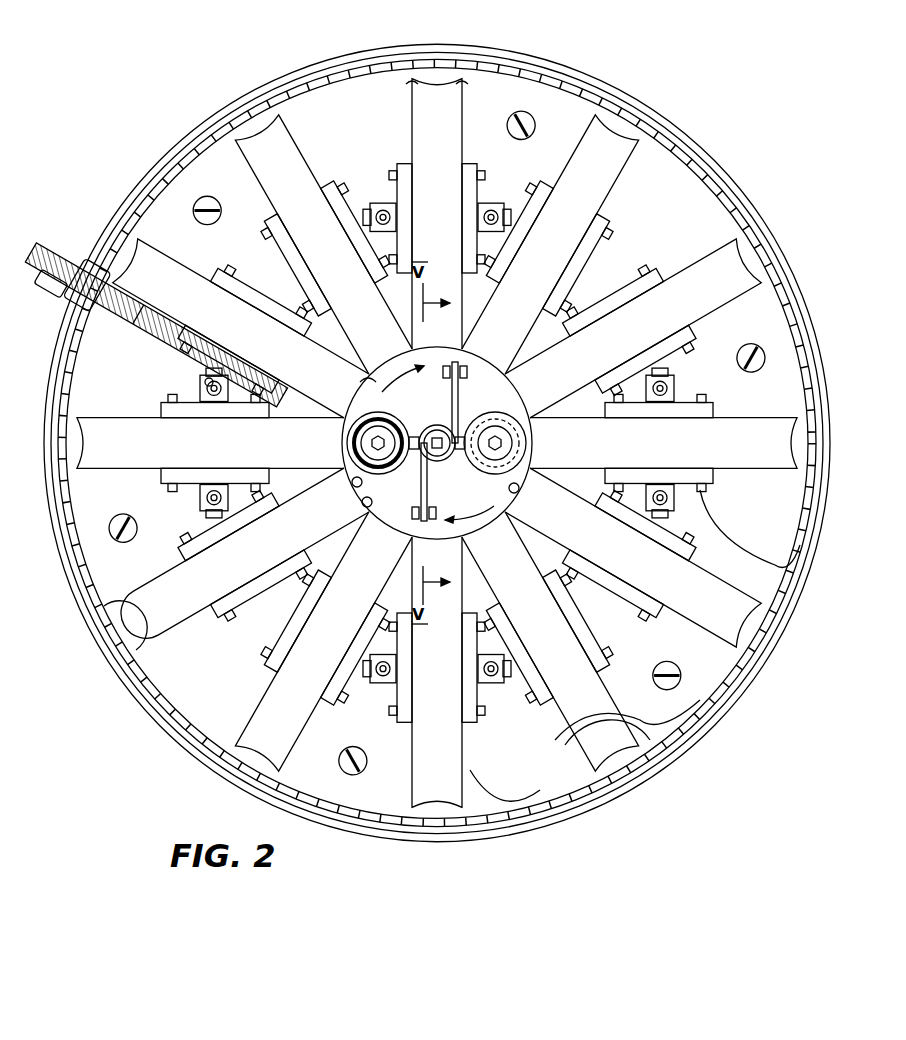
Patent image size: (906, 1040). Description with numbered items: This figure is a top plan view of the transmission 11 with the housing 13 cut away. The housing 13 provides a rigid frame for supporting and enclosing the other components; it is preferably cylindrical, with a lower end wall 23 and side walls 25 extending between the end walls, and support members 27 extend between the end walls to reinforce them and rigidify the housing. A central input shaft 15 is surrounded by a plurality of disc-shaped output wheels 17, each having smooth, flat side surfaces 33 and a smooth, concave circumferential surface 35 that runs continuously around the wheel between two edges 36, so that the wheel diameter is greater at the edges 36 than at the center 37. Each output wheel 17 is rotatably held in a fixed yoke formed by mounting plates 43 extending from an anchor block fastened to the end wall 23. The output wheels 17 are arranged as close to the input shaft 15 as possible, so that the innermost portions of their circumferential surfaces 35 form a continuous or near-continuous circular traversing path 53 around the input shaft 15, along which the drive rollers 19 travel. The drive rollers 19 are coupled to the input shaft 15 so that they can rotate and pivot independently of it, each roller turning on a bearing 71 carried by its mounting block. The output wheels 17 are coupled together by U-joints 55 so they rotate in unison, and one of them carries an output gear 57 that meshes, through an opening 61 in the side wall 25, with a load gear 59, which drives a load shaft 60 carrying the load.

The transmission 11 is at (172, 119).
The housing 13 is at (699, 150).
The input shaft 15 is at (433, 428).
The output wheels 17 is at (775, 565).
The drive rollers 19 is at (346, 443).
The lower end wall 23 is at (586, 104).
The side walls 25 is at (775, 240).
The support members 27 is at (786, 330).
The side surfaces 33 is at (405, 165).
The circumferential surface 35 is at (448, 72).
The edges 36 is at (412, 84).
The center 37 is at (454, 100).
The mounting plates 43 is at (268, 665).
The traversing path 53 is at (360, 495).
The U-joints 55 is at (500, 688).
The output gear 57 is at (200, 382).
The load gear 59 is at (170, 335).
The load shaft 60 is at (45, 300).
The opening 61 is at (100, 235).
The bearing 71 is at (363, 410).